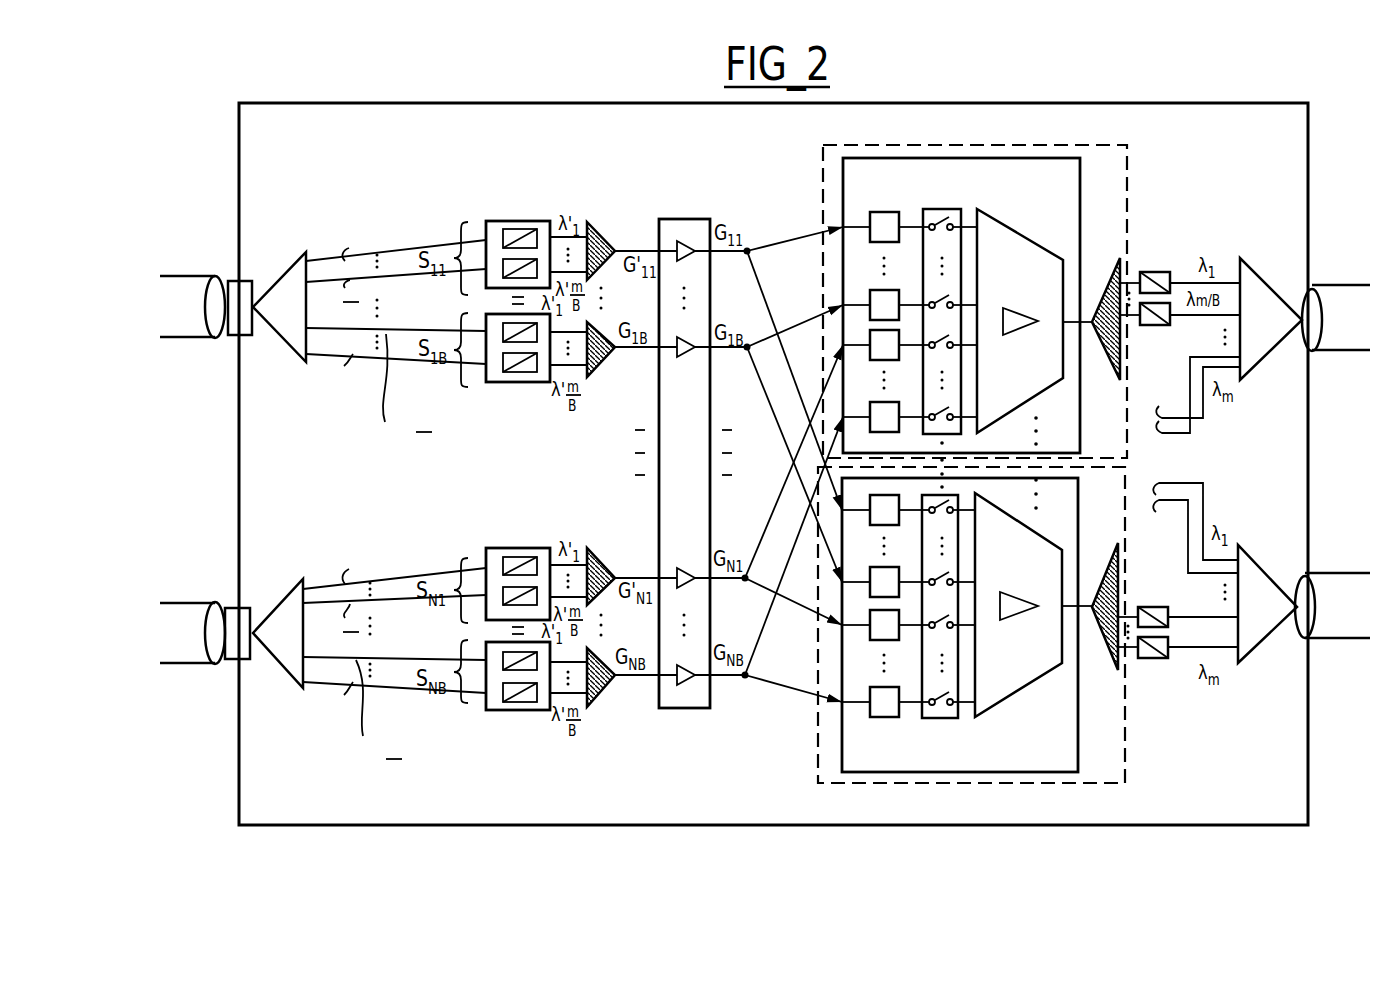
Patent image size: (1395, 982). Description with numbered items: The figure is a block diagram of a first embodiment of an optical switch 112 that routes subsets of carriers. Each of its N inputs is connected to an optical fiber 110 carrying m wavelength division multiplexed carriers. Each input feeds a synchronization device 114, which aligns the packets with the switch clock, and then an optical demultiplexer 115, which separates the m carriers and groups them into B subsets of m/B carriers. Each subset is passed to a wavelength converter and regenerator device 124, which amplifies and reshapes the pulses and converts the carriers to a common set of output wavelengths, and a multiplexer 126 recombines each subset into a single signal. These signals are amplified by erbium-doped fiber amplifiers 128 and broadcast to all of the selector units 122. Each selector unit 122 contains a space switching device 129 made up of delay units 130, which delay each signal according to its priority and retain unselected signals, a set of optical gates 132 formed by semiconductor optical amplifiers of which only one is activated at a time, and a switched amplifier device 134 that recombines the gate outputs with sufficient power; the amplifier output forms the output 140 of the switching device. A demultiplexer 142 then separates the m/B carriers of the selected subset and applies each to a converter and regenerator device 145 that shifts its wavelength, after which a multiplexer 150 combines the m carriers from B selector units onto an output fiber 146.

The switch 112 is at (373, 101).
The optical fiber 110 is at (183, 275).
The synchronization device 114 is at (230, 337).
The optical demultiplexer 115 is at (282, 270).
The wavelength converter and regenerator device 124 is at (517, 220).
The multiplexer 126 is at (601, 236).
The erbium-doped fiber amplifier 128 is at (706, 218).
The switching device 129 is at (895, 157).
The delay unit 130 is at (876, 211).
The set of optical gates 132 is at (940, 208).
The switched amplifier device 134 is at (1030, 232).
The output 140 is at (1083, 292).
The demultiplexer 142 is at (1126, 265).
The wavelength converter and regenerator device 145 is at (1155, 271).
The multiplexer 150 is at (1270, 284).
The output fiber 146 is at (1340, 284).
The selector unit 122 is at (1127, 156).